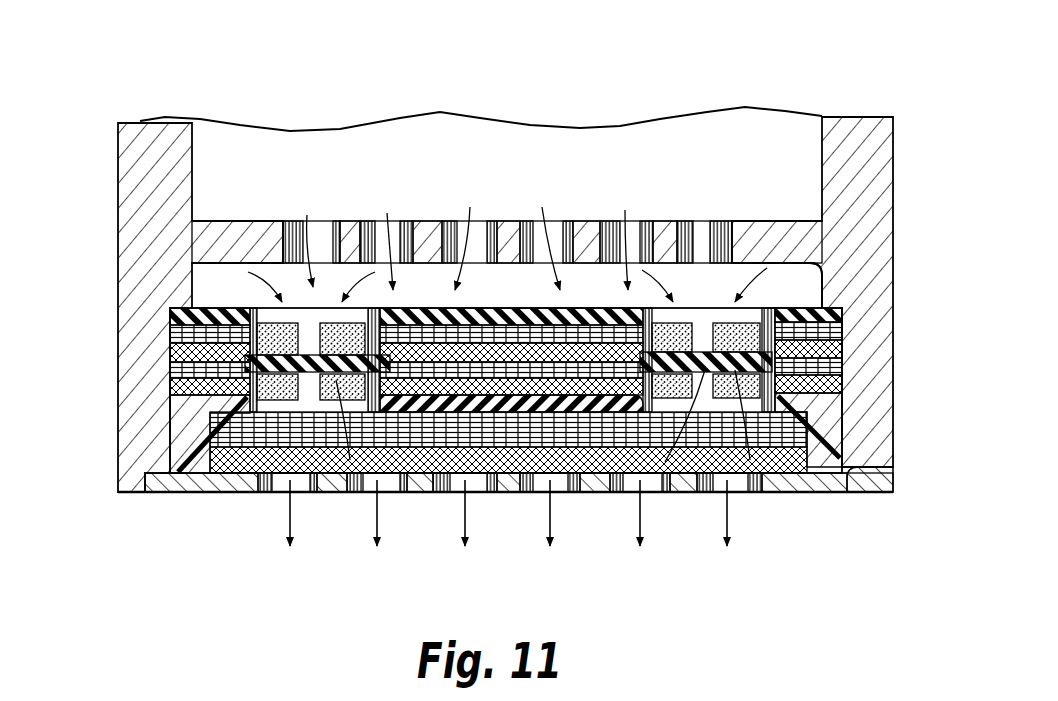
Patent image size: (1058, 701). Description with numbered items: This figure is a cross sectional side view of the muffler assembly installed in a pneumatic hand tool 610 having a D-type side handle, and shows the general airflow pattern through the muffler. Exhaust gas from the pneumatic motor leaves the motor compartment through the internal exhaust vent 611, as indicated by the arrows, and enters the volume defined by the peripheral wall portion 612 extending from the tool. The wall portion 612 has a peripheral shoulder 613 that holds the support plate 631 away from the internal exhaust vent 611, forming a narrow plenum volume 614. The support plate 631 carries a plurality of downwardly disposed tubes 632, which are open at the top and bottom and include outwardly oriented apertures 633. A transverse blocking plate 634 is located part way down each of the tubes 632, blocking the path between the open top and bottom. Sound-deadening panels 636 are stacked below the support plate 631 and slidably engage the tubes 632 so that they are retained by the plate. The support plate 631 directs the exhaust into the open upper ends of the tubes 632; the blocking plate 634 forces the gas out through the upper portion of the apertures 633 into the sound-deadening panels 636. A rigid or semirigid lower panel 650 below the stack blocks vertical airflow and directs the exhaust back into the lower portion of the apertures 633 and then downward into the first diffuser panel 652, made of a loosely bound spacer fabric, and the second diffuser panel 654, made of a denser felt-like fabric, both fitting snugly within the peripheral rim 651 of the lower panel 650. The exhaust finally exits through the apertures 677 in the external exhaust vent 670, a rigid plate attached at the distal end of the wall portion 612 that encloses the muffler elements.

The hand tool 610 is at (897, 140).
The internal exhaust vent 611 is at (227, 235).
The peripheral wall portion 612 is at (135, 340).
The peripheral shoulder 613 is at (838, 320).
The plenum volume 614 is at (220, 290).
The support plate 631 is at (815, 292).
The tubes 632 is at (175, 387).
The outwardly oriented apertures 633 is at (175, 313).
The transverse blocking plate 634 is at (305, 380).
The sound-deadening panels 636 is at (835, 345).
The lower panel 650 is at (828, 412).
The peripheral rim 651 is at (850, 457).
The first diffuser panel 652 is at (790, 490).
The second diffuser panel 654 is at (765, 490).
The external exhaust vent 670 is at (830, 490).
The apertures 677 is at (630, 490).